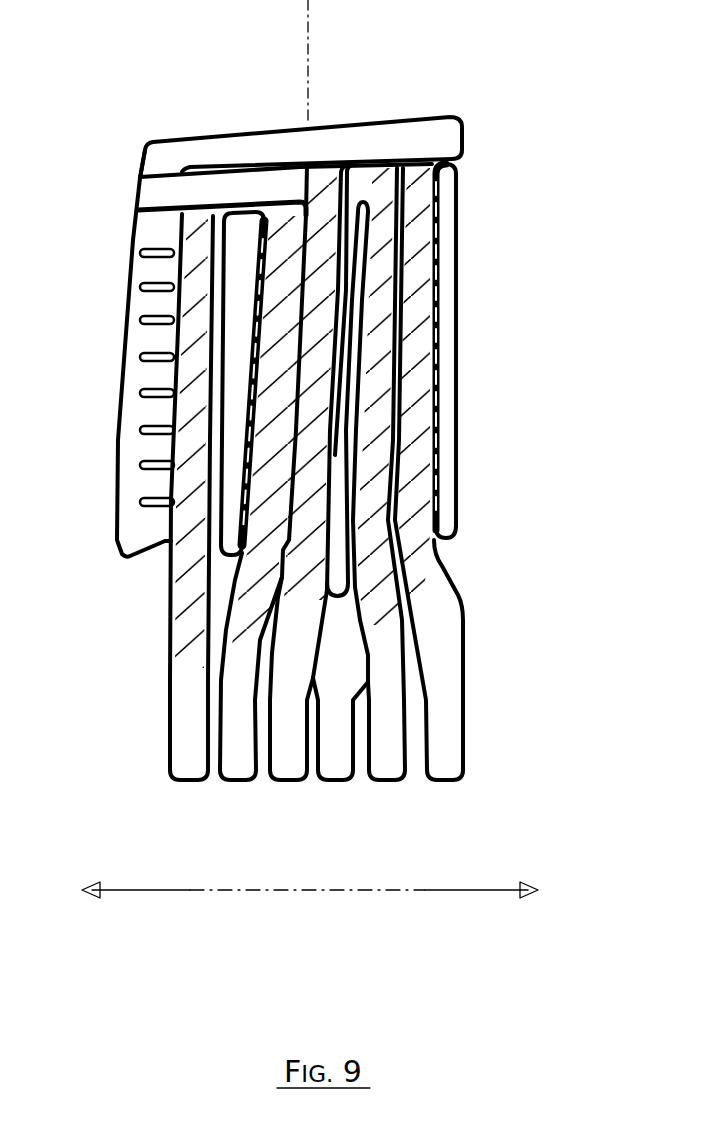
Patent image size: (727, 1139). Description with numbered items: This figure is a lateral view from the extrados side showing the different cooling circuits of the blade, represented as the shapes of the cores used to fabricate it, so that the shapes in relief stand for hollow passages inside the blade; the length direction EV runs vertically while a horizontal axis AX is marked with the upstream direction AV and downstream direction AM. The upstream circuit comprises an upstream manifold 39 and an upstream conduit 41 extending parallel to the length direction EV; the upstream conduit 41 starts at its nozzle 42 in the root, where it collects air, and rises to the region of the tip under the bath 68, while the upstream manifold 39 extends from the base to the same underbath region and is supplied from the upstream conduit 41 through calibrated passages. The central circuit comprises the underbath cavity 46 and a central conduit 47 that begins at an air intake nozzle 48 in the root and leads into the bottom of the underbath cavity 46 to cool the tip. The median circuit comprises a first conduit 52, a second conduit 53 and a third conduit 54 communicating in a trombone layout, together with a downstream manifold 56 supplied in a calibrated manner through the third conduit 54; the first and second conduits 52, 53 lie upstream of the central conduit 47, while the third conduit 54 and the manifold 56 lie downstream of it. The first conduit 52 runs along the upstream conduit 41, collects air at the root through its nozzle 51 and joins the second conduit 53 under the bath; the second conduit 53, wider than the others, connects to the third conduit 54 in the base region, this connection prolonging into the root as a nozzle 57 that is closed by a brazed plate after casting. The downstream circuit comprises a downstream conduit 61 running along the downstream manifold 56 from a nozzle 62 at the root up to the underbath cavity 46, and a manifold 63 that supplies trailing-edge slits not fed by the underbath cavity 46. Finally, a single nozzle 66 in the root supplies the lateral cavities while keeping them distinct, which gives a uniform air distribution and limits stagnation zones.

The upstream manifold 39 is at (452, 320).
The upstream conduit 41 is at (438, 352).
The nozzle 42 is at (448, 773).
The underbath cavity 46 is at (243, 183).
The central conduit 47 is at (323, 413).
The air intake nozzle 48 is at (293, 770).
The nozzle 51 is at (393, 770).
The first conduit 52 is at (380, 229).
The second conduit 53 is at (350, 268).
The third conduit 54 is at (275, 290).
The downstream manifold 56 is at (240, 257).
The nozzle 57 is at (240, 770).
The downstream conduit 61 is at (183, 403).
The nozzle 62 is at (193, 770).
The manifold 63 is at (143, 374).
The nozzle 66 is at (335, 770).
The bath 68 is at (289, 140).
The length direction EV is at (318, 23).
The upstream direction AV is at (140, 893).
The axial direction AX is at (298, 893).
The downstream direction AM is at (468, 893).